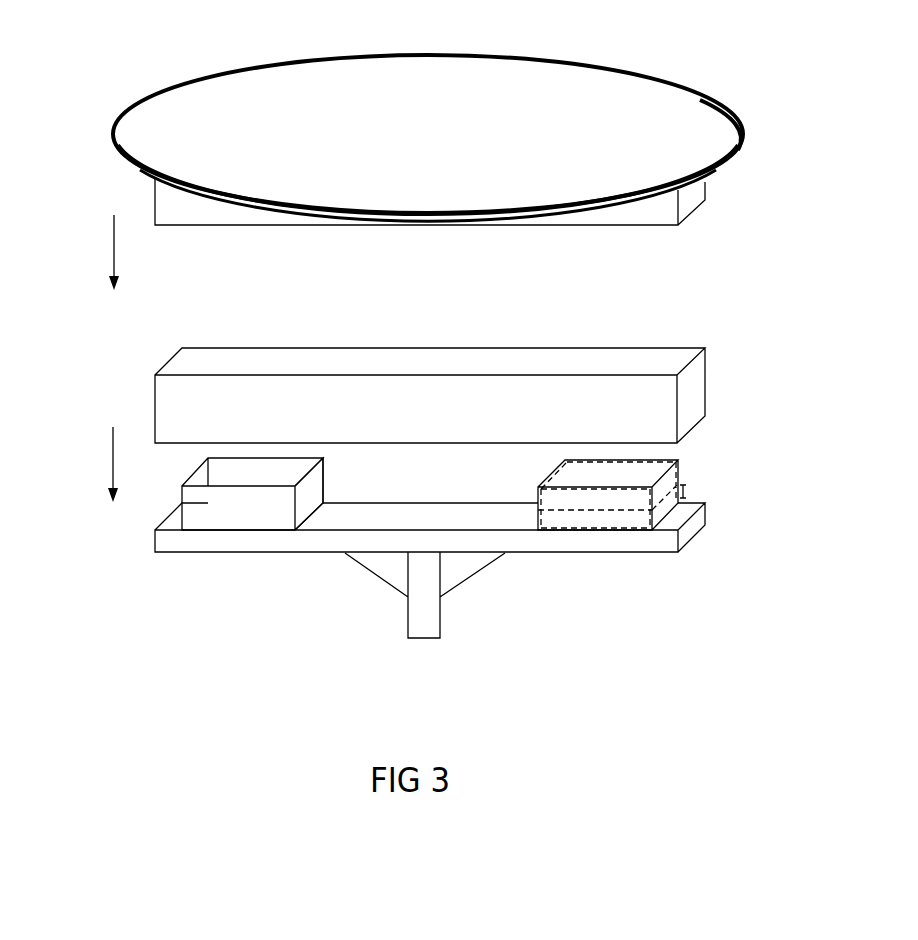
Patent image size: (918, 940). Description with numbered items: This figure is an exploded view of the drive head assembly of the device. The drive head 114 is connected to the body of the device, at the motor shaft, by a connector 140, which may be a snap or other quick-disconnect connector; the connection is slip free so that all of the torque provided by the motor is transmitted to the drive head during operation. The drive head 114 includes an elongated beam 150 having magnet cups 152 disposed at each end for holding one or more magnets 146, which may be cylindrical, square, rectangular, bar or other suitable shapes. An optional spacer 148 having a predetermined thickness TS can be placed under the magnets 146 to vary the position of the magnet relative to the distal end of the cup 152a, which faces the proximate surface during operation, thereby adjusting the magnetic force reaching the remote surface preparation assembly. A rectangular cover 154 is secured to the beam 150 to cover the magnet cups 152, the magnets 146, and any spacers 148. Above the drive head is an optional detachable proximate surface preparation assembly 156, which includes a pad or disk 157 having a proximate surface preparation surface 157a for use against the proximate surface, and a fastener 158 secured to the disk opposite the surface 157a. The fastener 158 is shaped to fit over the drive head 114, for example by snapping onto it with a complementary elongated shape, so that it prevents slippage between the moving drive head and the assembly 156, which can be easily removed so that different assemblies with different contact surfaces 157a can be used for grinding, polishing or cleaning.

The drive head 114 is at (402, 542).
The connector 140 is at (440, 626).
The magnet 146 is at (680, 467).
The spacer 148 is at (546, 523).
The elongated beam 150 is at (678, 550).
The magnet cup 152 is at (193, 503).
The distal end of the cup 152a is at (323, 460).
The rectangular cover 154 is at (694, 386).
The proximate surface preparation assembly 156 is at (423, 122).
The disk 157 is at (124, 113).
The proximate surface preparation surface 157a is at (720, 118).
The fastener 158 is at (697, 205).
The thickness of the spacer TS is at (690, 496).